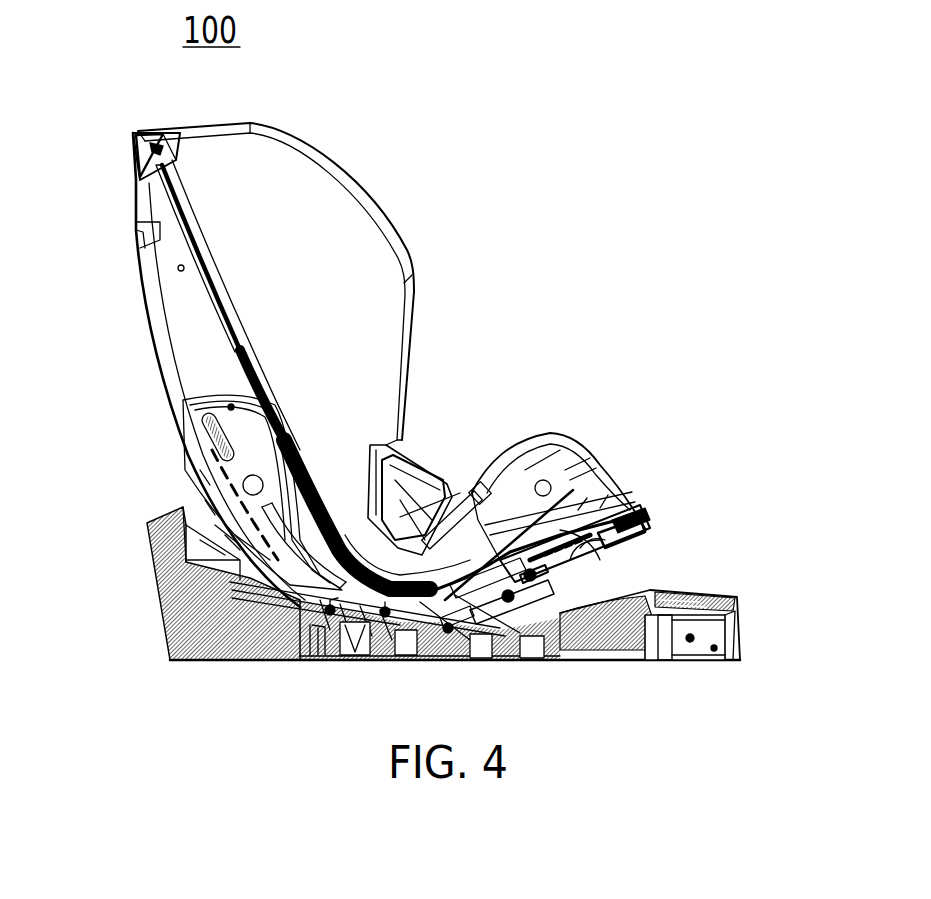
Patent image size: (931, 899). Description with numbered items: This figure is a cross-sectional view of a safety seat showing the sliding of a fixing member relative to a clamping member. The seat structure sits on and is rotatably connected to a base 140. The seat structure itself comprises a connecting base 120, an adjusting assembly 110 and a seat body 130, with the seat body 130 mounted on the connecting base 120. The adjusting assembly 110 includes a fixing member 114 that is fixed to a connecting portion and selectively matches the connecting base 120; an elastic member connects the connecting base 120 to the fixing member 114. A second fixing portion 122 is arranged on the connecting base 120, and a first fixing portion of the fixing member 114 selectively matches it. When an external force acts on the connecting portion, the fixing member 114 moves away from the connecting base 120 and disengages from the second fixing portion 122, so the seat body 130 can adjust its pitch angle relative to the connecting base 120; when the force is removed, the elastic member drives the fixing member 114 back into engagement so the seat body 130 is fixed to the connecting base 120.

The adjusting assembly 110 is at (650, 522).
The fixing member 114 is at (485, 660).
The connecting base 120 is at (175, 415).
The second fixing portion 122 is at (572, 492).
The seat body 130 is at (415, 276).
The base 140 is at (712, 645).